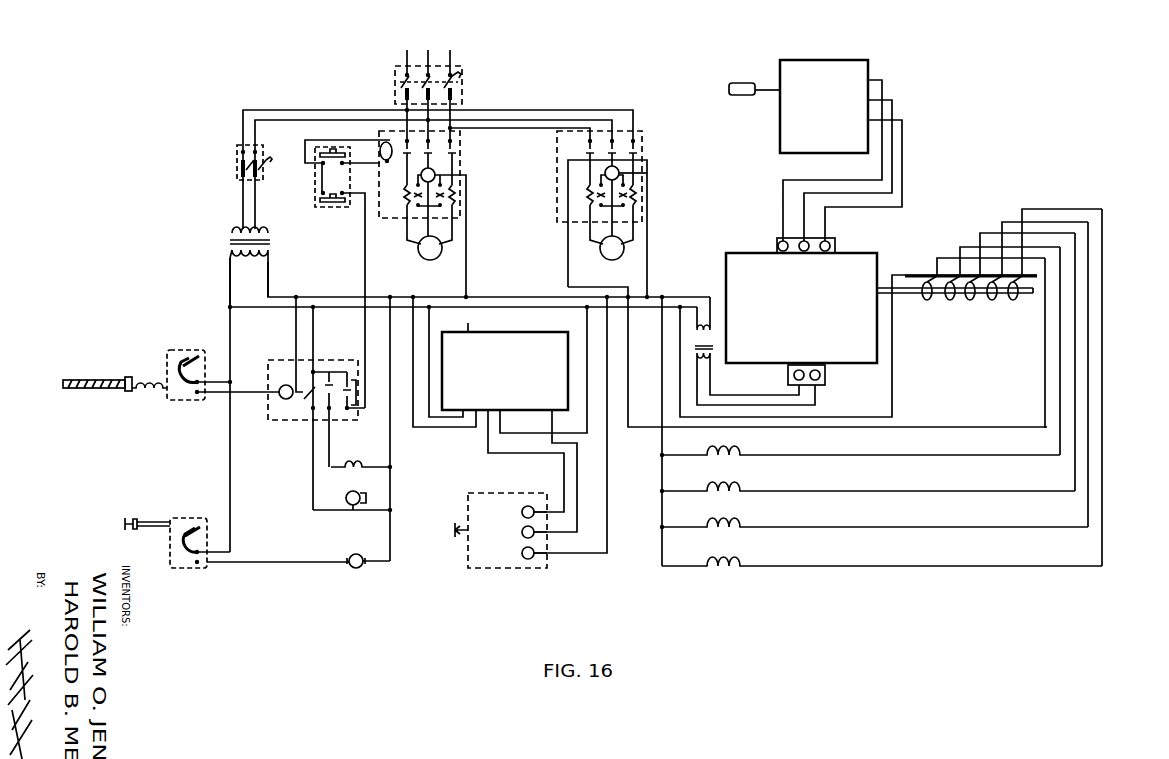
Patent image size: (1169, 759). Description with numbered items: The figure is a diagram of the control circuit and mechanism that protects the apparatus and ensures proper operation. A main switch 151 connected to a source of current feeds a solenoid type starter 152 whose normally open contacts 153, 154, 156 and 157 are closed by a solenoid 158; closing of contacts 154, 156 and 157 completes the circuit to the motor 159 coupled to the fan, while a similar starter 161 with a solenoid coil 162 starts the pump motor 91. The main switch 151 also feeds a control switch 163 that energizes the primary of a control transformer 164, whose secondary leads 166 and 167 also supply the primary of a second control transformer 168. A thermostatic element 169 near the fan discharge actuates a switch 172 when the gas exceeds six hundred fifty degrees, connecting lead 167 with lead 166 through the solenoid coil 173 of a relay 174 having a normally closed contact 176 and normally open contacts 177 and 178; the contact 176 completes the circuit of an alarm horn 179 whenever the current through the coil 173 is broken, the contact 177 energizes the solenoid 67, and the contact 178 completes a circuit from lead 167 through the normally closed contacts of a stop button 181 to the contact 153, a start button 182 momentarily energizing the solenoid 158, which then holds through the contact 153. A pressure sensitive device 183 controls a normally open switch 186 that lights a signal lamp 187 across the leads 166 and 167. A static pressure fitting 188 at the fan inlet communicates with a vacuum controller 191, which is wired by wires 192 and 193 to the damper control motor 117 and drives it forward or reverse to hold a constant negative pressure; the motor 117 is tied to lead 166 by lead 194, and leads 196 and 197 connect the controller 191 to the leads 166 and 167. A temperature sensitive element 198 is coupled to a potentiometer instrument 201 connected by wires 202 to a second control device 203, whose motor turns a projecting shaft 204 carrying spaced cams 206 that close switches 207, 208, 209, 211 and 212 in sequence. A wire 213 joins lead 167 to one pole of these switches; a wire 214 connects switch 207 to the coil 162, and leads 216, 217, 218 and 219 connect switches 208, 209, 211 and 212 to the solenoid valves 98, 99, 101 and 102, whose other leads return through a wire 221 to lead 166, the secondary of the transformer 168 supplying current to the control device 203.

The solenoid 67 is at (362, 468).
The pump motor 91 is at (625, 251).
The solenoid valve 98 is at (738, 458).
The solenoid valve 99 is at (740, 494).
The solenoid valve 101 is at (742, 530).
The solenoid valve 102 is at (740, 568).
The damper control motor 117 is at (548, 566).
The main switch 151 is at (459, 90).
The solenoid type starter 152 is at (469, 161).
The contact 153 is at (407, 146).
The contact 154 is at (397, 78).
The contact 156 is at (432, 147).
The contact 157 is at (455, 147).
The solenoid 158 is at (457, 176).
The motor 159 is at (443, 251).
The starter 161 is at (651, 161).
The solenoid coil 162 is at (622, 176).
The control switch 163 is at (240, 158).
The control transformer 164 is at (232, 230).
The lead 166 is at (268, 281).
The lead 167 is at (230, 281).
The second control transformer 168 is at (713, 335).
The thermostatic element 169 is at (115, 379).
The switch 172 is at (188, 350).
The solenoid coil 173 is at (282, 386).
The relay 174 is at (307, 422).
The normally closed contact 176 is at (311, 408).
The normally open contact 177 is at (320, 372).
The normally open contact 178 is at (346, 372).
The alarm horn 179 is at (350, 493).
The stop button 181 is at (333, 205).
The start button 182 is at (330, 149).
The pressure sensitive device 183 is at (130, 531).
The normally open switch 186 is at (200, 569).
The signal lamp 187 is at (349, 560).
The static pressure fitting 188 is at (468, 330).
The vacuum controller 191 is at (507, 391).
The wire 192 is at (563, 472).
The wire 193 is at (577, 470).
The lead 194 is at (607, 472).
The lead 196 is at (413, 402).
The lead 197 is at (428, 380).
The temperature sensitive element 198 is at (741, 98).
The potentiometer instrument 201 is at (831, 115).
The wires 202 is at (902, 157).
The second control device 203 is at (823, 315).
The projecting shaft 204 is at (885, 288).
The cams 206 is at (927, 300).
The switch 207 is at (937, 272).
The switch 208 is at (960, 272).
The switch 209 is at (980, 272).
The switch 211 is at (1002, 272).
The switch 212 is at (1022, 272).
The wire 213 is at (892, 383).
The wire 214 is at (944, 428).
The lead 216 is at (1060, 340).
The lead 217 is at (1075, 350).
The lead 218 is at (1088, 368).
The lead 219 is at (1102, 385).
The wire 221 is at (662, 510).